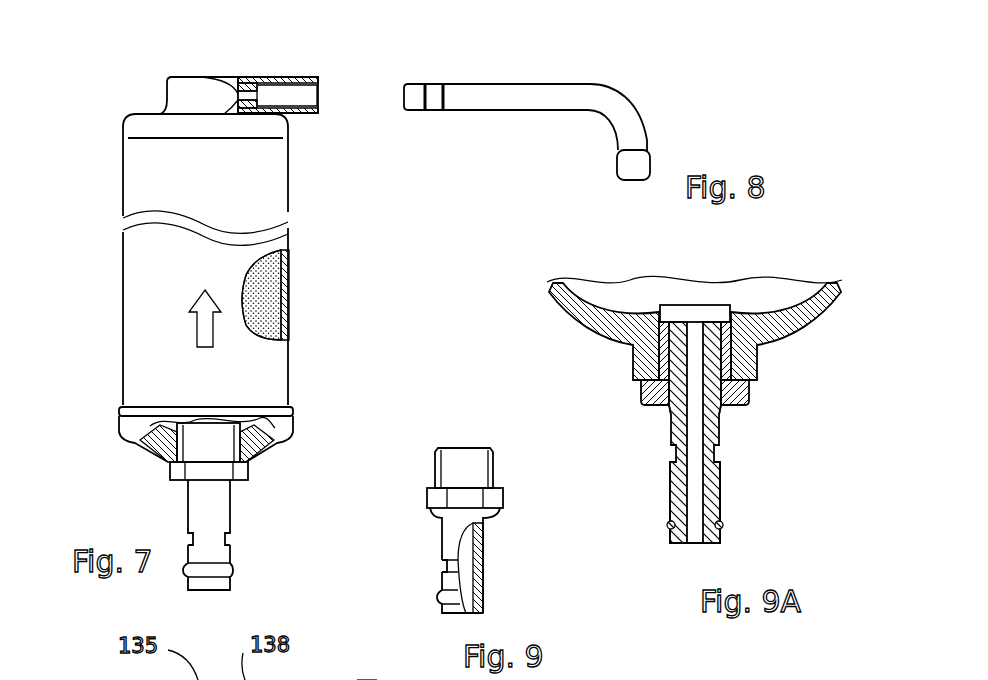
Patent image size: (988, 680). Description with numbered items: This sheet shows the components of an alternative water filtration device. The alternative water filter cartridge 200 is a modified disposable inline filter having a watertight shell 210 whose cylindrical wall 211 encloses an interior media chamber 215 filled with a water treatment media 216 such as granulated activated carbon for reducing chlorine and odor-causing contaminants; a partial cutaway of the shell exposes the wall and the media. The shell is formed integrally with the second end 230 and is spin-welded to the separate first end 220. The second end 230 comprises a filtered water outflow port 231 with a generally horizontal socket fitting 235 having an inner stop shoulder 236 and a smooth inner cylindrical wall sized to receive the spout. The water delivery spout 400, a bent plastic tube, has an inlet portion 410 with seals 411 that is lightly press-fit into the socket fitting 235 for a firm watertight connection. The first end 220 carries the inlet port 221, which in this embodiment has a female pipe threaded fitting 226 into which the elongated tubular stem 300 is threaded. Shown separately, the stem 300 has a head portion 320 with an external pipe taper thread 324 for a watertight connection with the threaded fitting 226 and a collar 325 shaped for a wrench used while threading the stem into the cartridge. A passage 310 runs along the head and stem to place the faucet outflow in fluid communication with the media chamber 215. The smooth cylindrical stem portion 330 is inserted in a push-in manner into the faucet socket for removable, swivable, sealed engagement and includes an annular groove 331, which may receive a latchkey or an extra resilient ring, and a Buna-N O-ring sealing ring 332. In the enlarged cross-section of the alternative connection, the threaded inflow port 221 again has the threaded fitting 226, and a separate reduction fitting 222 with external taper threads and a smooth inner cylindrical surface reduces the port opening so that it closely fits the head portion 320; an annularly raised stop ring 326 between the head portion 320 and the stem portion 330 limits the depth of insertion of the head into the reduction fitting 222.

In FIG. 7, the water filter cartridge 200 is at (88, 281).
In FIG. 7, the watertight shell 210 is at (152, 344).
In FIG. 7, the cylindrical wall 211 is at (290, 268).
In FIG. 7, the media chamber 215 is at (262, 305).
In FIG. 7, the water treatment media 216 is at (313, 300).
In FIG. 7, the first end 220 is at (138, 425).
In FIG. 7, the inlet port 221 is at (255, 440).
In FIG. 9A, the inlet port 221 is at (745, 356).
In FIG. 9A, the reduction fitting 222 is at (753, 402).
In FIG. 7, the threaded fitting 226 is at (170, 455).
In FIG. 9A, the threaded fitting 226 is at (672, 311).
In FIG. 7, the second end 230 is at (175, 127).
In FIG. 7, the filtered water outflow port 231 is at (188, 95).
In FIG. 7, the socket fitting 235 is at (270, 94).
In FIG. 7, the stop shoulder 236 is at (212, 90).
In FIG. 7, the stem 300 is at (212, 512).
In FIG. 9, the stem 300 is at (455, 535).
In FIG. 9A, the stem 300 is at (722, 480).
In FIG. 9, the passage 310 is at (465, 553).
In FIG. 9, the head portion 320 is at (457, 448).
In FIG. 9A, the head portion 320 is at (678, 337).
In FIG. 9, the external pipe taper thread 324 is at (495, 465).
In FIG. 9, the collar 325 is at (505, 500).
In FIG. 9A, the stop ring 326 is at (668, 410).
In FIG. 7, the stem portion 330 is at (215, 553).
In FIG. 9, the stem portion 330 is at (455, 615).
In FIG. 9A, the stem portion 330 is at (670, 543).
In FIG. 9, the groove 331 is at (445, 562).
In FIG. 9, the sealing ring 332 is at (440, 598).
In FIG. 9A, the sealing ring 332 is at (727, 528).
In FIG. 8, the water delivery spout 400 is at (543, 65).
In FIG. 8, the inlet portion 410 is at (462, 84).
In FIG. 8, the seals 411 is at (425, 96).